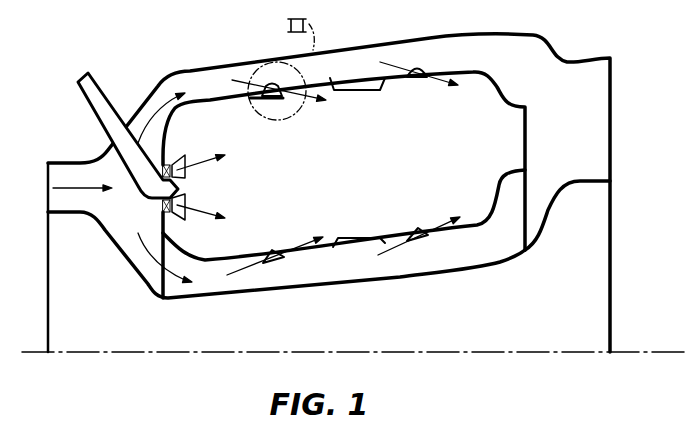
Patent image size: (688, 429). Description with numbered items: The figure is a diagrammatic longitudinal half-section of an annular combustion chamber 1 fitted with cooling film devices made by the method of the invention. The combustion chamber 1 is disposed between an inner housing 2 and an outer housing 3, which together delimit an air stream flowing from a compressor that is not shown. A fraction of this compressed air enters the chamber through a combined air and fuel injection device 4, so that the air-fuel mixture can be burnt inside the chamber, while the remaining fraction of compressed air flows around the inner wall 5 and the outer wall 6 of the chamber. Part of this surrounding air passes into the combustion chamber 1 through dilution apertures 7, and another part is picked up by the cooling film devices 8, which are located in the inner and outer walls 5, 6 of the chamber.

The annular combustion chamber 1 is at (352, 173).
The inner housing 2 is at (488, 268).
The outer housing 3 is at (470, 36).
The combined air and fuel injection device 4 is at (151, 146).
The inner wall of the chamber 5 is at (207, 262).
The outer wall of the chamber 6 is at (205, 100).
The dilution apertures 7 is at (362, 80).
The cooling film devices 8 is at (270, 82).